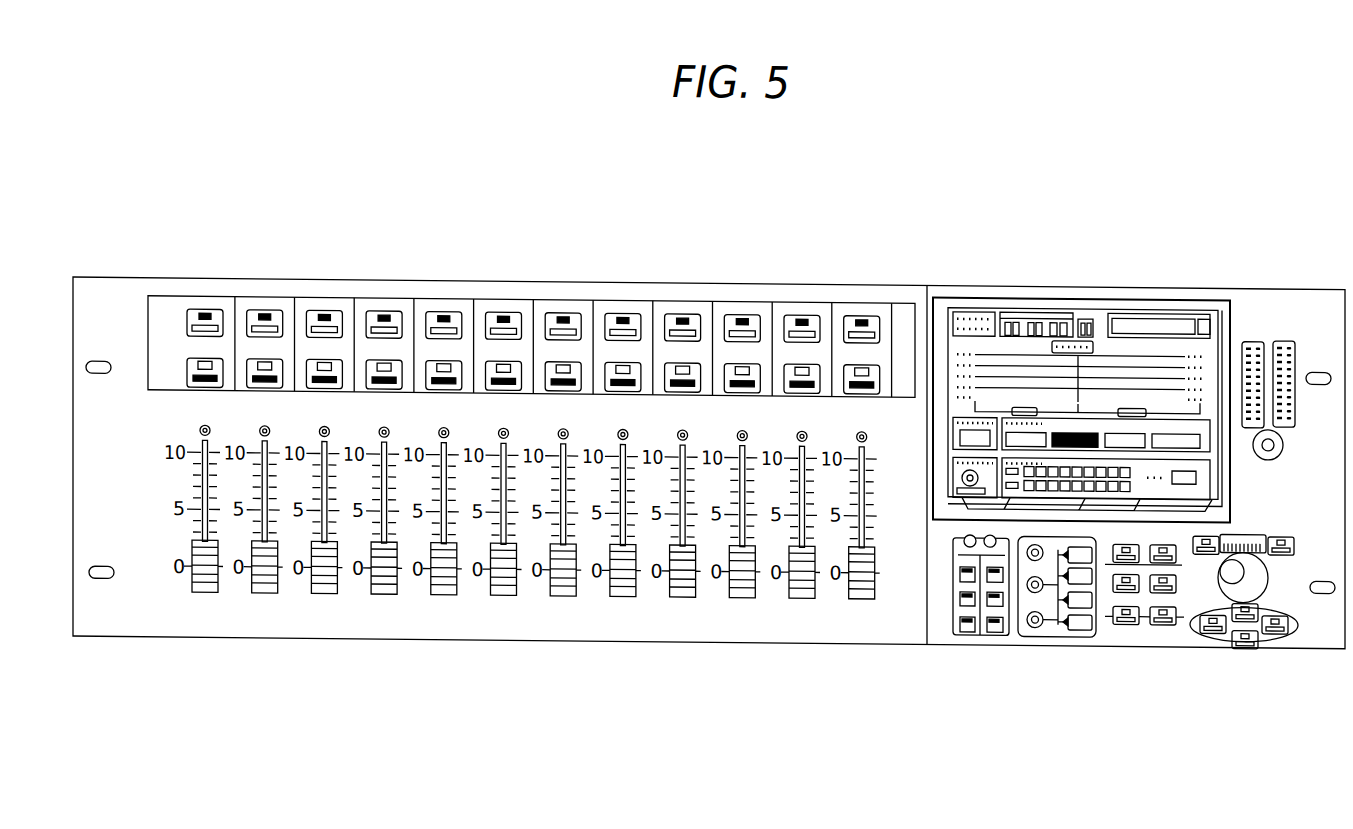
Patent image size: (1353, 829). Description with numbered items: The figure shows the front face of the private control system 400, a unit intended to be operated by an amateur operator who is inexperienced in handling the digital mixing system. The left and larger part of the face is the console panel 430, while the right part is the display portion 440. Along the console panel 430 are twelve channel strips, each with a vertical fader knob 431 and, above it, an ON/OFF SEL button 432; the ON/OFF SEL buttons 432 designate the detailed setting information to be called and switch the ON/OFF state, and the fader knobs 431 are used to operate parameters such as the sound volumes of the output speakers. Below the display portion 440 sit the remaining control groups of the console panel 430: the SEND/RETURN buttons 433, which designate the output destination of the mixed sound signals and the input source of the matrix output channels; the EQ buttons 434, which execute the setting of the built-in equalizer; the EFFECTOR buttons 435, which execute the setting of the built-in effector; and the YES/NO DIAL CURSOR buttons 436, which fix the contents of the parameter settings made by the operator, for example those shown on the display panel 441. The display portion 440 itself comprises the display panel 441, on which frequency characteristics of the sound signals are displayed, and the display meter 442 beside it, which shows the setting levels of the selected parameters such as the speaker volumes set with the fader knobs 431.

The private control system 400 is at (865, 187).
The console panel 430 is at (593, 248).
The fader knobs 431 is at (205, 588).
The ON/OFF SEL buttons 432 is at (213, 307).
The SEND/RETURN buttons 433 is at (960, 627).
The EQ buttons 434 is at (1047, 628).
The EFFECTOR buttons 435 is at (1120, 615).
The YES/NO DIAL CURSOR buttons 436 is at (1212, 628).
The display portion 440 is at (1108, 220).
The display panel 441 is at (1005, 289).
The display meter 442 is at (1263, 328).